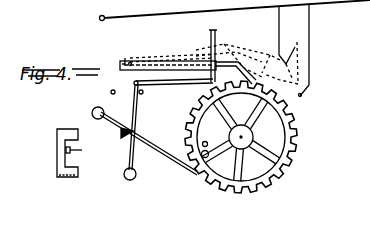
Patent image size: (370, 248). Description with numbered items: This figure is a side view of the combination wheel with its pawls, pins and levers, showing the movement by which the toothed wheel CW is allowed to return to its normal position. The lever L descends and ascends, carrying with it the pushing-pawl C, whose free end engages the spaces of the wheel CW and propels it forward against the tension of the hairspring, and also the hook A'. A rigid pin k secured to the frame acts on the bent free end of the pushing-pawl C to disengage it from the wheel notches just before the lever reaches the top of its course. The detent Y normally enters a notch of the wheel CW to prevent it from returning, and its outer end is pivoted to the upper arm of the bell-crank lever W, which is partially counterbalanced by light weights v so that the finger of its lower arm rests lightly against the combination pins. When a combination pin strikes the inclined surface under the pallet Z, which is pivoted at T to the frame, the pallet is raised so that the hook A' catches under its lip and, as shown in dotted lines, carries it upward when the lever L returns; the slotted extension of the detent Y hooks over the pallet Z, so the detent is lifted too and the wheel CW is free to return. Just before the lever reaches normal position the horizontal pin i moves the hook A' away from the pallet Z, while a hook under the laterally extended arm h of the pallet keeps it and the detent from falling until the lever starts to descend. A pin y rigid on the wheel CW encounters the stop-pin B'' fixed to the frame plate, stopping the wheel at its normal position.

The lever L is at (235, 12).
The hook A' is at (286, 30).
The pushing-pawl C is at (312, 40).
The pin k is at (302, 95).
The horizontal pin i is at (281, 63).
The laterally-extended lip or arm h is at (230, 42).
The detent Y is at (173, 82).
The pivot of pallet T is at (167, 58).
The pallet Z is at (166, 63).
The toothed wheel CW is at (286, 150).
The pin or projection y is at (210, 139).
The stop-pin B'' is at (215, 160).
The bell-crank lever W is at (149, 143).
The light weights v is at (113, 139).